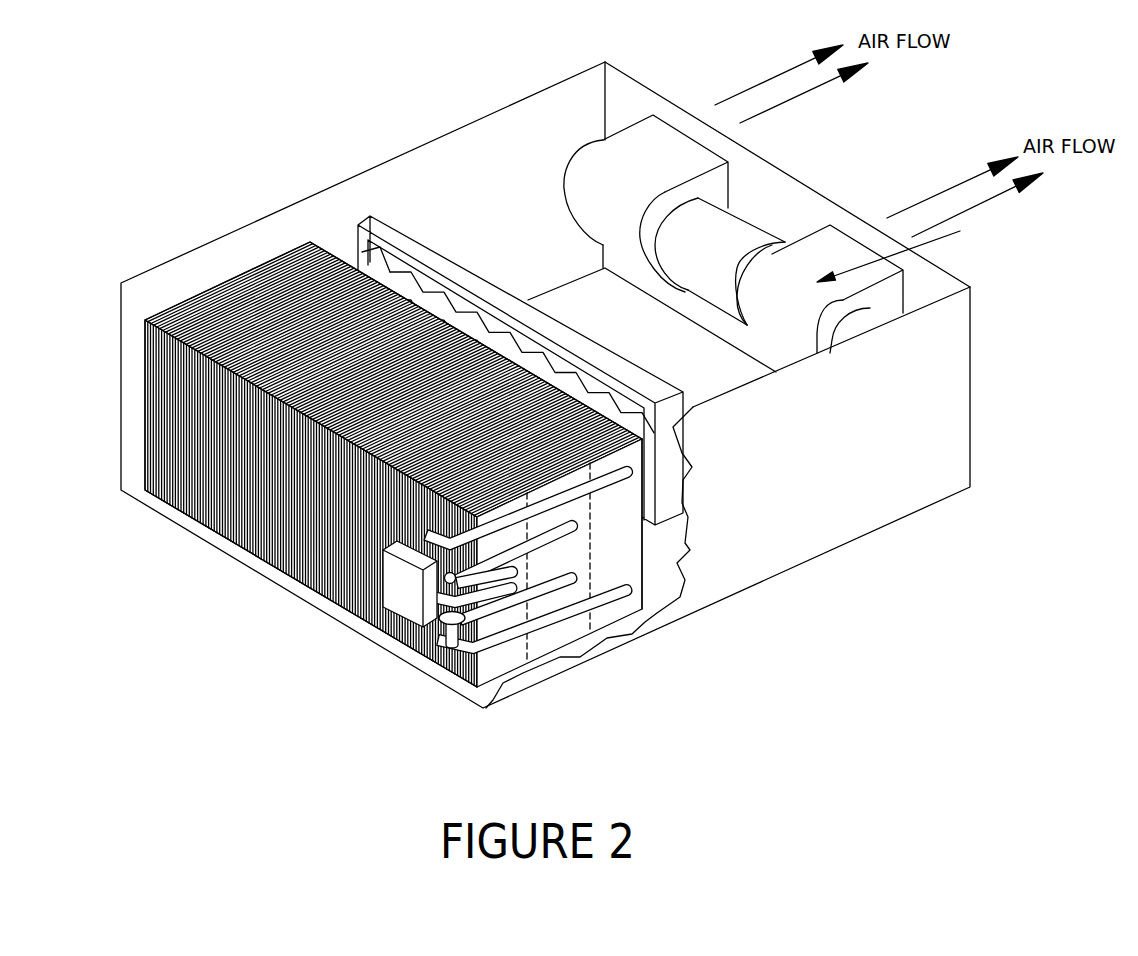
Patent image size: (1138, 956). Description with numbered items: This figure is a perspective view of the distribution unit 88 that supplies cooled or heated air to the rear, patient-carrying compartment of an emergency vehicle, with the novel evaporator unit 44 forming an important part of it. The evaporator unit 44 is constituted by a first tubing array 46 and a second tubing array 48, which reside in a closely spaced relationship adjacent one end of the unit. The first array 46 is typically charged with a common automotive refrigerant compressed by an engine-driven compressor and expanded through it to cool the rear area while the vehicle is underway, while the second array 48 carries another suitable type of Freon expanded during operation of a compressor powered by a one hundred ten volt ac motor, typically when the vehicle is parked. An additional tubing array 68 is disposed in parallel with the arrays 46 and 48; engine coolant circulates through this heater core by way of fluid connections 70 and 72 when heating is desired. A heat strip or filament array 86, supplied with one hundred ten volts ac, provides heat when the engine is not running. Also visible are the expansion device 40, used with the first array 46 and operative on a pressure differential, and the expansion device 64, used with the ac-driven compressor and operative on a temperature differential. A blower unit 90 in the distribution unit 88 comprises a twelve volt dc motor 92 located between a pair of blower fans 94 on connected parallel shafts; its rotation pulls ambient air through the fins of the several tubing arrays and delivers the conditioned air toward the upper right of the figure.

The expansion device 40 is at (403, 580).
The evaporator unit 44 is at (257, 267).
The first tubing array 46 is at (510, 658).
The second tubing array 48 is at (567, 558).
The expansion device 64 is at (450, 647).
The tubing array 68 is at (623, 549).
The fluid connection 70 is at (437, 560).
The fluid connection 72 is at (487, 650).
The heat strip 86 is at (383, 223).
The distribution unit 88 is at (820, 503).
The blower unit 90 is at (960, 231).
The motor 92 is at (707, 247).
The blower fans 94 is at (665, 153).